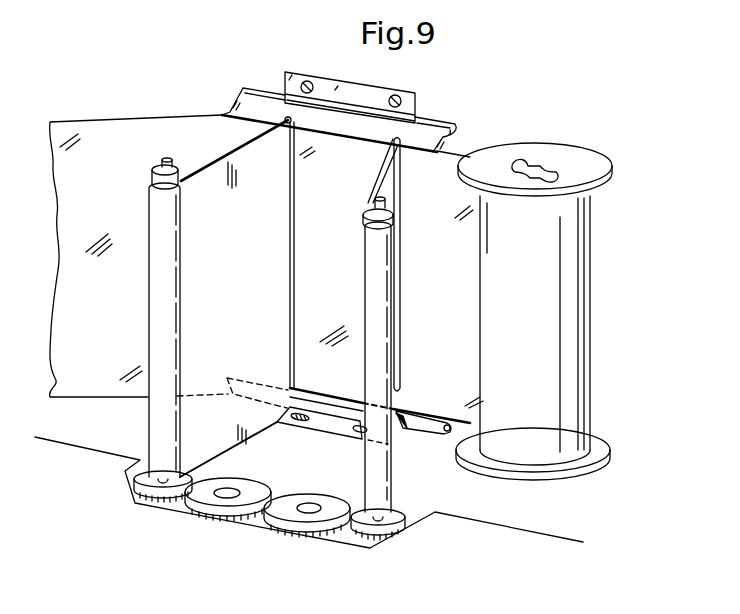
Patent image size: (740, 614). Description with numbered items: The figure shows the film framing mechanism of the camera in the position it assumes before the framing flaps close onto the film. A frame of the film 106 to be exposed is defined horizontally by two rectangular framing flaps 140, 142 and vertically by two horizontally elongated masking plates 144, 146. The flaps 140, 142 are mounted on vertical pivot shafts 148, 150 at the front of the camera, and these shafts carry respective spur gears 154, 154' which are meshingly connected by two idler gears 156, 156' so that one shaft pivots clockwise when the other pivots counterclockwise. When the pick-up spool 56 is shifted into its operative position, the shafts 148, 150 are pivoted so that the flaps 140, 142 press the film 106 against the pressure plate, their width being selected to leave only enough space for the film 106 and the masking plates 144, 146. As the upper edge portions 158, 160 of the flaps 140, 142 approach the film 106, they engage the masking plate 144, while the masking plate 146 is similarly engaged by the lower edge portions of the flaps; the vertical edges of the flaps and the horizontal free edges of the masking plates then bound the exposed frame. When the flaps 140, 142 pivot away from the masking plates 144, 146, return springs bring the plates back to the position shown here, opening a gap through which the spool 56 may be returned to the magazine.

The pick-up spool 56 is at (604, 164).
The film 106 is at (108, 133).
The framing flap 140 is at (250, 291).
The framing flap 142 is at (398, 283).
The masking plate 144 is at (443, 123).
The masking plate 146 is at (421, 416).
The pivot shaft 148 is at (152, 168).
The pivot shaft 150 is at (366, 212).
The spur gear 154 is at (133, 495).
The spur gear 154' is at (397, 543).
The idler gear 156 is at (215, 517).
The idler gear 156' is at (304, 534).
The upper edge portion 158 is at (213, 170).
The upper edge portion 160 is at (379, 170).